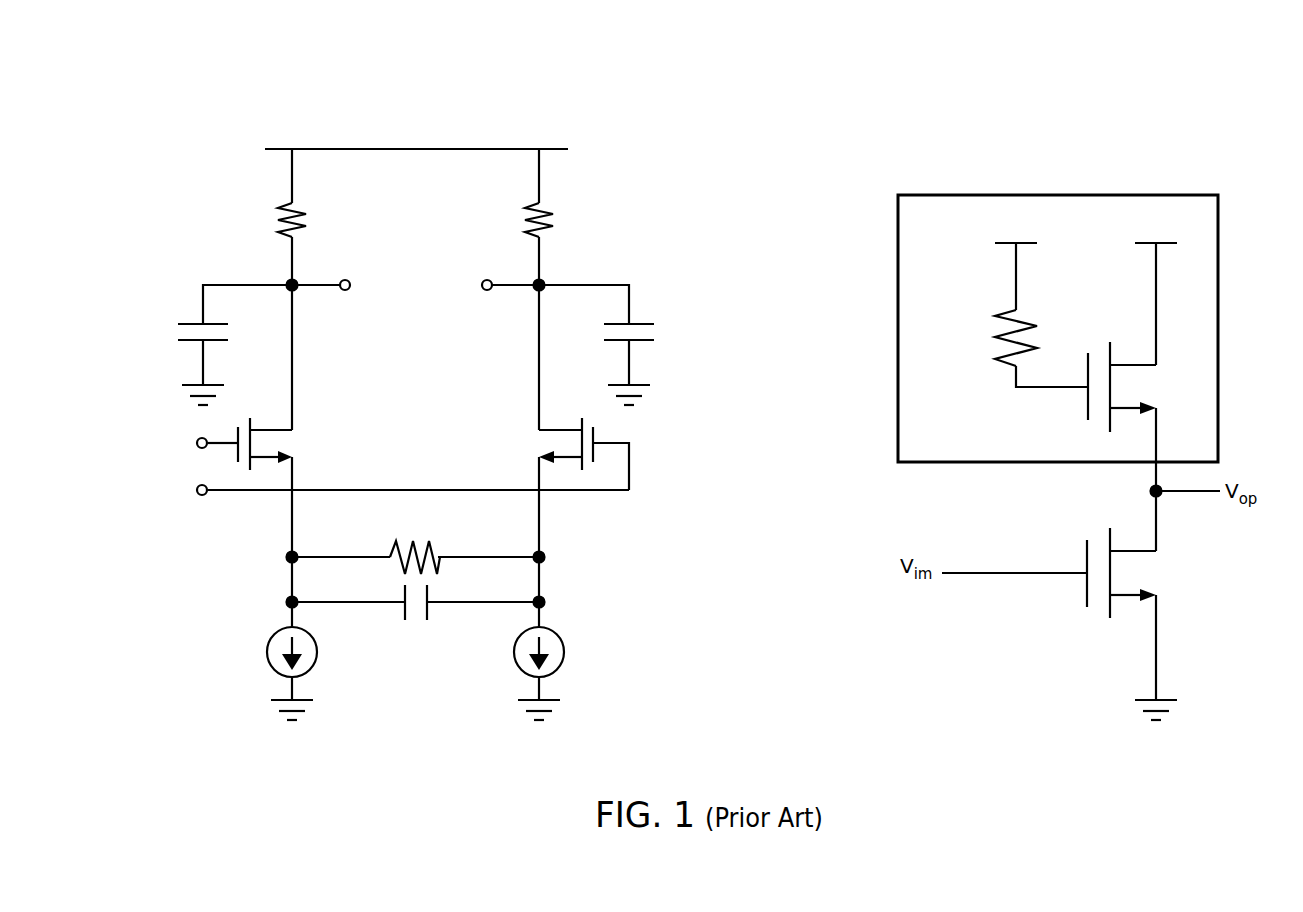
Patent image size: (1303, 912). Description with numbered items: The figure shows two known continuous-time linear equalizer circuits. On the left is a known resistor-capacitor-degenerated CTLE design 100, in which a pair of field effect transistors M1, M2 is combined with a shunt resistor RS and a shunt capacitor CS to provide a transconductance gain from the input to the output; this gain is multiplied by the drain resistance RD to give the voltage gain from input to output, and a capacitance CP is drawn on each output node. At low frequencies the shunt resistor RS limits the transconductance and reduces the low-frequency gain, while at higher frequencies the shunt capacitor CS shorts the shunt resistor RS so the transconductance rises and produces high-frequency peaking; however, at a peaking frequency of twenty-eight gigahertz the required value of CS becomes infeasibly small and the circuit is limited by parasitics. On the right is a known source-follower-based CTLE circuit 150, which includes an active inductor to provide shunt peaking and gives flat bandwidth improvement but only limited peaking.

The resistor-capacitor (RC)-degenerated CTLE design 100 is at (256, 93).
The source-follower (SF)-based CTLE circuit 150 is at (932, 193).
The field effect transistor M1 is at (285, 444).
The field effect transistor M2 is at (545, 444).
The drain resistance RD is at (416, 220).
The shunt resistor RS is at (415, 541).
The parasitic capacitor CP is at (416, 345).
The shunt capacitor CS is at (415, 620).